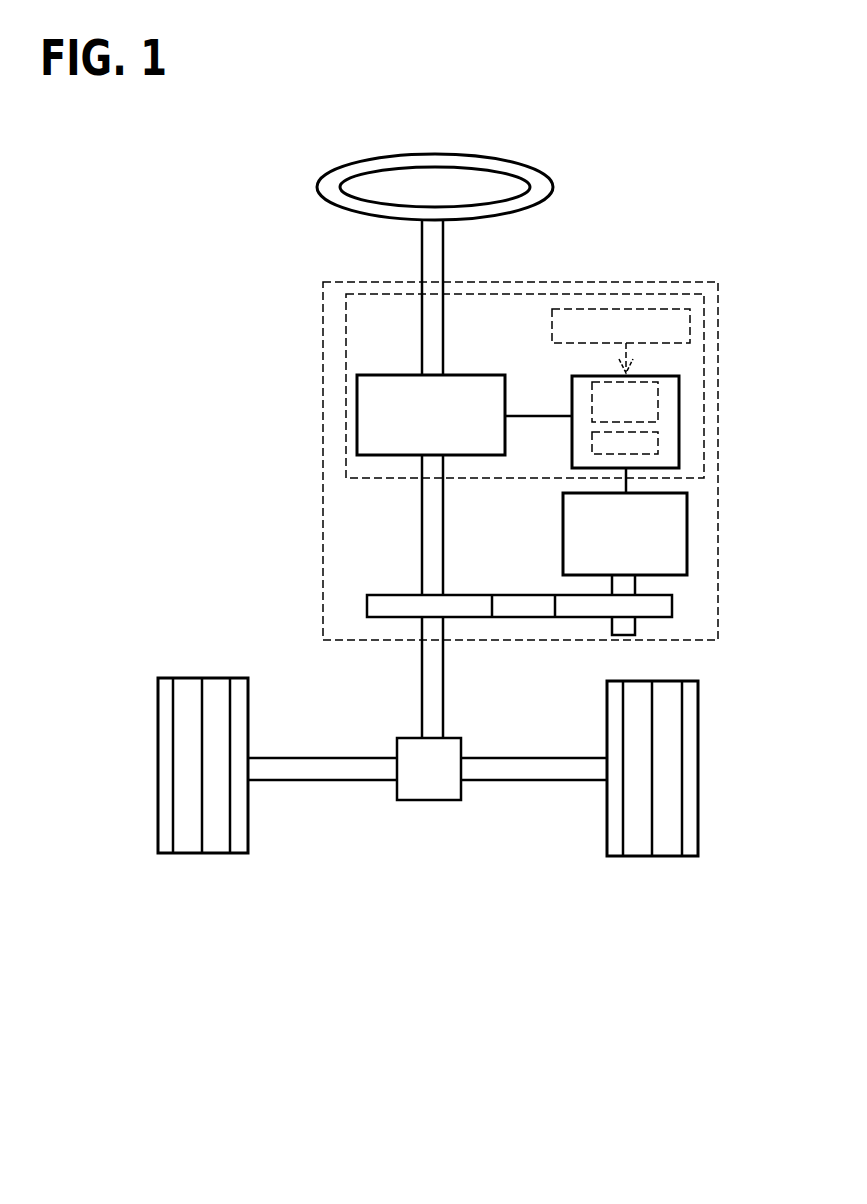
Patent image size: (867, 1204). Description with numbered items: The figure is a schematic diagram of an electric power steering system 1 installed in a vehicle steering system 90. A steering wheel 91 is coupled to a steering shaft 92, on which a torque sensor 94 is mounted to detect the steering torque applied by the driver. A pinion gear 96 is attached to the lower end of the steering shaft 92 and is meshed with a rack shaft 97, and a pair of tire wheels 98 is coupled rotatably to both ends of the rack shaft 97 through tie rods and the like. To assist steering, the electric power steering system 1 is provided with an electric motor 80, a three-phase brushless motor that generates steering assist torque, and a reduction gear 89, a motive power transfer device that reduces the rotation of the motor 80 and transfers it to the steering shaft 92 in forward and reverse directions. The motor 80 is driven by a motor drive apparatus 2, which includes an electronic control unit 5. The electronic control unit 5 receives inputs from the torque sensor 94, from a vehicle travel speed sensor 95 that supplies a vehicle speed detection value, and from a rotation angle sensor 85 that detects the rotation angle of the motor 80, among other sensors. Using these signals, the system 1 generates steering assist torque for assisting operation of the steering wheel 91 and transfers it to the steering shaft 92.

The electric power steering system 1 is at (637, 282).
The motor drive apparatus 2 is at (573, 294).
The electronic control unit (ECU) 5 is at (658, 400).
The electric motor 80 is at (687, 520).
The rotation angle sensor 85 is at (658, 441).
The reduction gear 89 is at (672, 603).
The steering system 90 is at (378, 898).
The steering wheel 91 is at (316, 188).
The steering shaft 92 is at (422, 258).
The torque sensor 94 is at (357, 425).
The vehicle travel speed sensor 95 is at (690, 325).
The pinion gear 96 is at (418, 800).
The rack shaft 97 is at (315, 782).
The tire wheels 98 is at (218, 853).